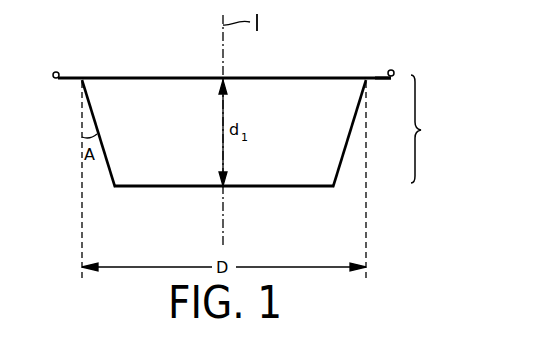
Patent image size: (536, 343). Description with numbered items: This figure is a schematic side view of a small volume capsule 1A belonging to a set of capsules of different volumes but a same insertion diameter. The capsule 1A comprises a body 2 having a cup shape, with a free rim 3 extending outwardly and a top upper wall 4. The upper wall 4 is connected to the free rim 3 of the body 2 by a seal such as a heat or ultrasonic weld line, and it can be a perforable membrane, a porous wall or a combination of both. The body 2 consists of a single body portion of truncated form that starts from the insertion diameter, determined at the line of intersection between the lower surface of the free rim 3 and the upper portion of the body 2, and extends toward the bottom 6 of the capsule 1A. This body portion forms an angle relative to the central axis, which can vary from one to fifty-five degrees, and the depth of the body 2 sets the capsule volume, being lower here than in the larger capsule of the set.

The small volume capsule 1A is at (431, 129).
The body 2 is at (337, 190).
The free rim 3 is at (376, 79).
The top upper wall 4 is at (316, 76).
The bottom 6 is at (258, 189).